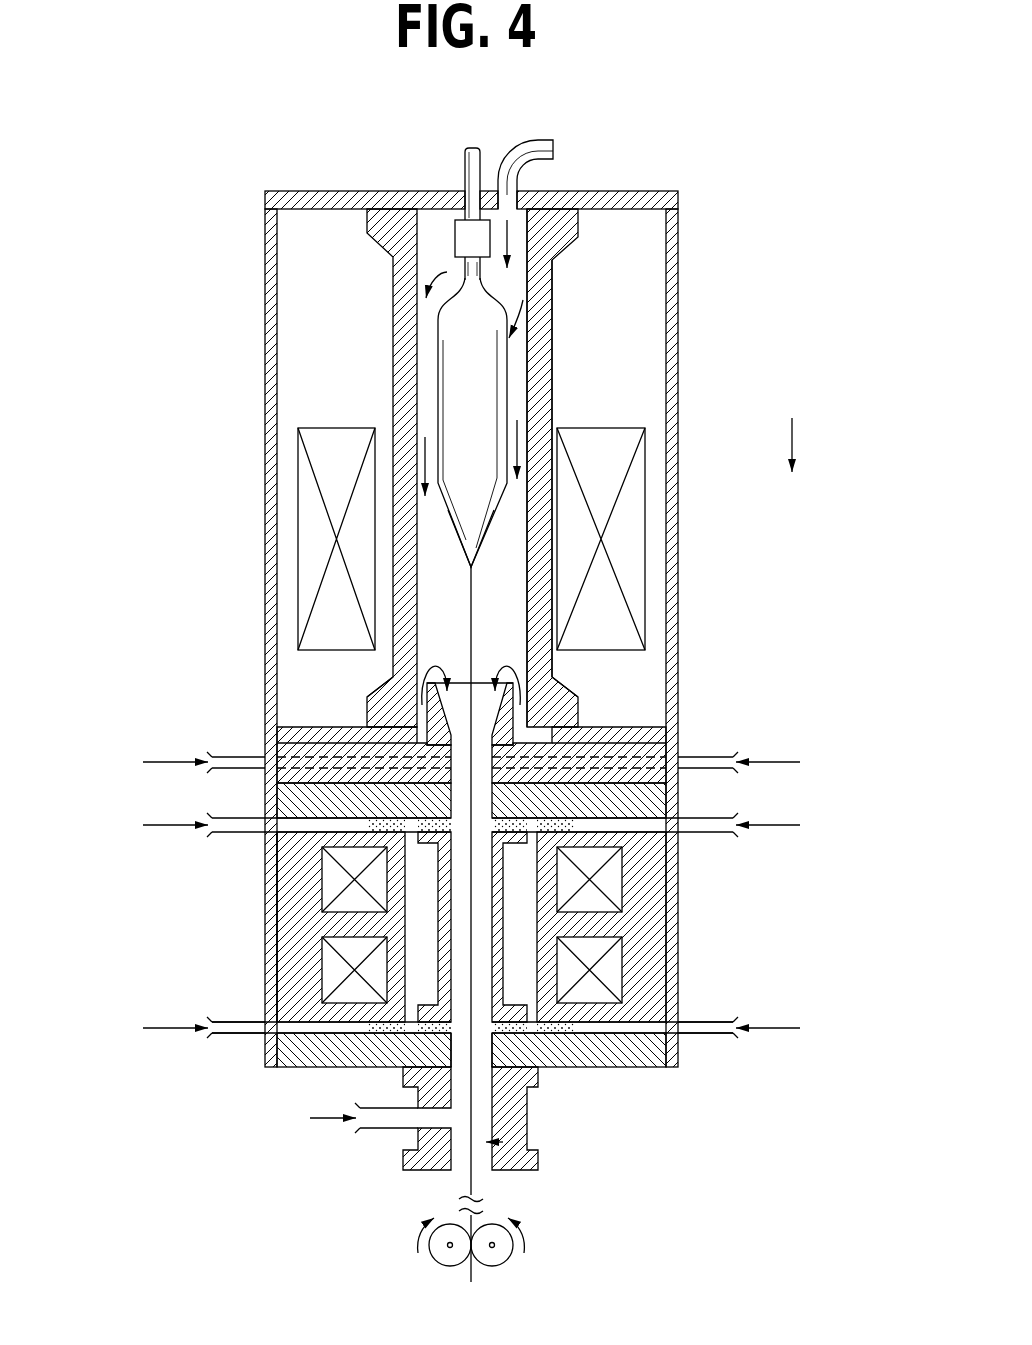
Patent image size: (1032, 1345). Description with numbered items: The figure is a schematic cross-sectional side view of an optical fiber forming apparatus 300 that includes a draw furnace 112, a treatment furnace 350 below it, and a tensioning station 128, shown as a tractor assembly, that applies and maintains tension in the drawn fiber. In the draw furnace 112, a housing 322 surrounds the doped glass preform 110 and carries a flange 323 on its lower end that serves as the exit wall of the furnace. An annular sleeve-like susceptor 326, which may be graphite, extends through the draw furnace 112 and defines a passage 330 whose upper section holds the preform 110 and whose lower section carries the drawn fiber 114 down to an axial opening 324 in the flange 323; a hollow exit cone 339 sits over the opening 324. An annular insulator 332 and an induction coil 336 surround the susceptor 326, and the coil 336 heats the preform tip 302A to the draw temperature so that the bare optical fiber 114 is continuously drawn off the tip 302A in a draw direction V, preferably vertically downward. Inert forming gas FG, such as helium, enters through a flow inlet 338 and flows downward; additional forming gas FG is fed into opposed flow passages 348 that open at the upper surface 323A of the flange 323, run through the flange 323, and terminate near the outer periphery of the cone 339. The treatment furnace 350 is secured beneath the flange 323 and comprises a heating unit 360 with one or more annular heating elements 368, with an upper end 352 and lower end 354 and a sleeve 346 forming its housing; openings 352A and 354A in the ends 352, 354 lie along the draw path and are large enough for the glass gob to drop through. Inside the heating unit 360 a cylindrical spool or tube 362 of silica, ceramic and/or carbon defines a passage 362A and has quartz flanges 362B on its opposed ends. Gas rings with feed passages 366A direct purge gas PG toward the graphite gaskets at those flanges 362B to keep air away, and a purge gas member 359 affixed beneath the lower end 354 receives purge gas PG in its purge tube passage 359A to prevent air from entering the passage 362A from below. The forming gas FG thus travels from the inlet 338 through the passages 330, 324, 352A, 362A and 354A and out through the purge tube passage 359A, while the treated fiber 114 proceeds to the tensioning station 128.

The optical fiber forming apparatus 300 is at (774, 206).
The glass preform 110 is at (452, 336).
The draw furnace 112 is at (681, 405).
The draw direction V is at (792, 455).
The optical fiber 114 is at (470, 623).
The tensioning station 128 is at (518, 1260).
The preform tip 302A is at (468, 570).
The housing 322 is at (681, 545).
The flange 323 is at (600, 758).
The upper surface of the flange 323A is at (355, 725).
The axial opening 324 is at (586, 658).
The susceptor 326 is at (553, 348).
The passage 330 is at (536, 292).
The annular insulator 332 is at (547, 400).
The induction coil 336 is at (302, 463).
The flow inlet 338 is at (556, 150).
The exit cone 339 is at (483, 691).
The sleeve 346 is at (277, 888).
The flow passages 348 is at (277, 743).
The treatment furnace 350 is at (729, 926).
The upper end of the treatment furnace 352 is at (340, 798).
The upper opening 352A is at (463, 817).
The lower end of the treatment furnace 354 is at (547, 1112).
The lower opening 354A is at (425, 1042).
The purge gas member 359 is at (563, 1135).
The purge tube passage 359A is at (527, 1152).
The heating unit 360 is at (496, 927).
The spool or tube 362 is at (455, 925).
The passage 362A is at (462, 960).
The flanges 362B is at (385, 828).
The feed passages 366A is at (232, 1025).
The heating elements 368 is at (605, 876).
The forming gas FG is at (513, 240).
The purge gas PG is at (145, 828).